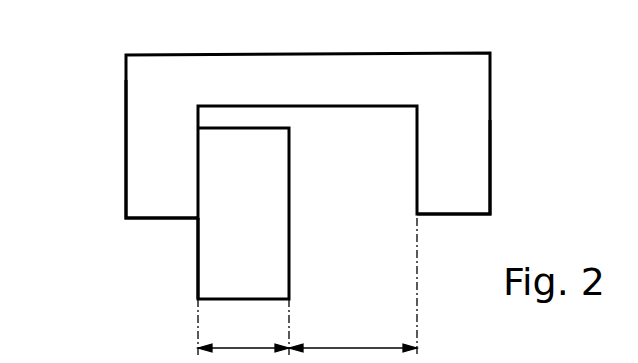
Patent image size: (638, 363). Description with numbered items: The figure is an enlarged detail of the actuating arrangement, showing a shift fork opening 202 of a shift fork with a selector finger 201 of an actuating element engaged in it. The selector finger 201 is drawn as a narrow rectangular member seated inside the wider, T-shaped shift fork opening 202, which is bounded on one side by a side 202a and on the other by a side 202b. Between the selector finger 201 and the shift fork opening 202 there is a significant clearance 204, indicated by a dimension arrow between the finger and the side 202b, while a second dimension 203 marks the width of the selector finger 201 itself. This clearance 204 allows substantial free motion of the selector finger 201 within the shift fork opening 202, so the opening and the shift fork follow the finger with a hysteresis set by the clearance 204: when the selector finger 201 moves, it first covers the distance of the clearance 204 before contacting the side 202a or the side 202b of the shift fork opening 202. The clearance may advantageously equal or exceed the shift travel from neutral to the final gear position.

The selector finger 201 is at (240, 250).
The shift fork opening 202 is at (457, 118).
The side of the shift fork opening 202a is at (156, 149).
The side of the shift fork opening 202b is at (461, 182).
The width of inner electrode 203 is at (243, 327).
The clearance 204 is at (353, 286).